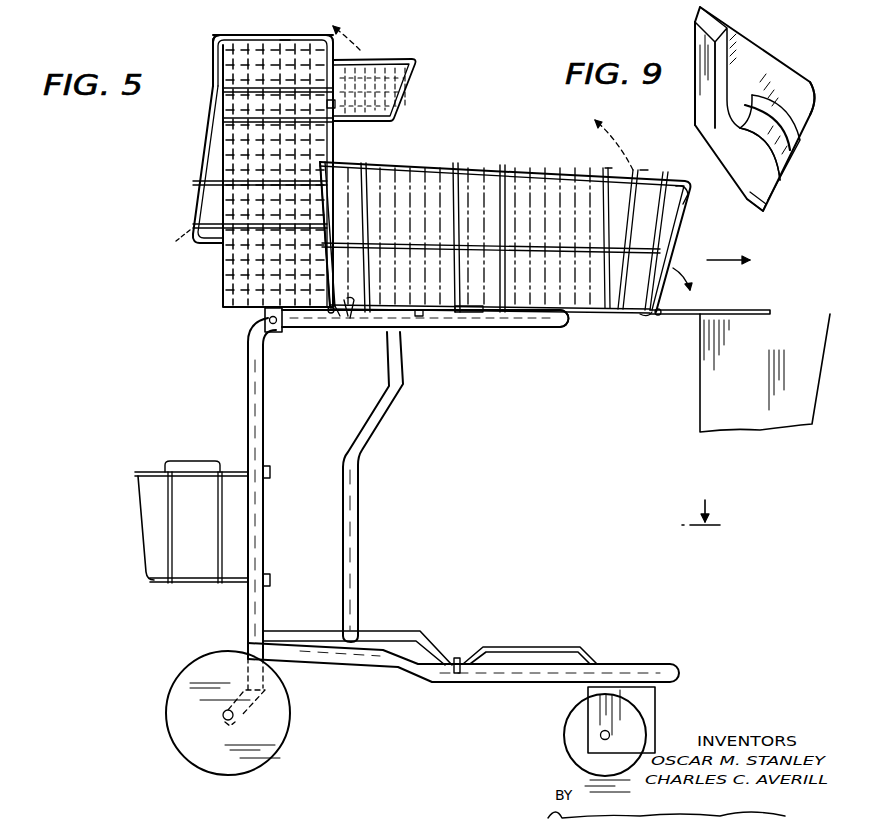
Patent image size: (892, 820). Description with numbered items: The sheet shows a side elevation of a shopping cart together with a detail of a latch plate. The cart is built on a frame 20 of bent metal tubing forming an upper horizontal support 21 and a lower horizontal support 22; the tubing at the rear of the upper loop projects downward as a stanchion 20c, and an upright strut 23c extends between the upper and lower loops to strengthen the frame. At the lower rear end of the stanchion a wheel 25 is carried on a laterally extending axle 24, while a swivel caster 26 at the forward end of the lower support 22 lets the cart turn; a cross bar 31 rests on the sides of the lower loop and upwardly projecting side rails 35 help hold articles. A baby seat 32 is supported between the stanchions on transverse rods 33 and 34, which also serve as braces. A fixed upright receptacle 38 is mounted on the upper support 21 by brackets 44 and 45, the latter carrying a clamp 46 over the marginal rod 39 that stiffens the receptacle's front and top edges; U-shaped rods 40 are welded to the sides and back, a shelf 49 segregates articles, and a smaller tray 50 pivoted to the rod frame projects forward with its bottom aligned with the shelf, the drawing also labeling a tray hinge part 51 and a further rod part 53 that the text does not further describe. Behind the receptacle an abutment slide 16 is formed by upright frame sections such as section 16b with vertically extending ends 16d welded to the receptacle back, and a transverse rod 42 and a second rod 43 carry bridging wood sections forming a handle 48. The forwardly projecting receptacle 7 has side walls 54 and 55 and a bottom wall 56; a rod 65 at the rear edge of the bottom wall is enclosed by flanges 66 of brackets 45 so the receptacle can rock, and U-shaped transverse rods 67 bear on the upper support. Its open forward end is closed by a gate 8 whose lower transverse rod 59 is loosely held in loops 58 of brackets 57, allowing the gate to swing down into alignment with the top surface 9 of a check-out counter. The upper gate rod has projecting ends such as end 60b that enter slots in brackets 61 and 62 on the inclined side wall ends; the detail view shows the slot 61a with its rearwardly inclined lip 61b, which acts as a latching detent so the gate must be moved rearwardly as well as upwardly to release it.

In FIG. 5, the forwardly projecting receptacle 7 is at (588, 172).
In FIG. 9, the forwardly projecting receptacle 7 is at (814, 86).
In FIG. 5, the gate 8 is at (672, 238).
In FIG. 5, the top surface 9 is at (800, 314).
In FIG. 5, the abutment slide 16 is at (183, 220).
In FIG. 5, the abutment slide section 16b is at (192, 181).
In FIG. 5, the vertically extending end 16d is at (212, 54).
In FIG. 5, the frame 20 is at (440, 730).
In FIG. 5, the stanchion 20c is at (248, 424).
In FIG. 5, the upper horizontal support 21 is at (450, 322).
In FIG. 5, the lower horizontal support 22 is at (418, 681).
In FIG. 5, the upright strut 23c is at (366, 436).
In FIG. 5, the axle 24 is at (223, 715).
In FIG. 5, the wheel 25 is at (190, 752).
In FIG. 5, the caster 26 is at (590, 735).
In FIG. 5, the cross bar 31 is at (466, 640).
In FIG. 5, the baby seat 32 is at (185, 588).
In FIG. 5, the transverse rod 33 is at (270, 472).
In FIG. 5, the transverse rod 34 is at (270, 586).
In FIG. 5, the side rail 35 is at (552, 648).
In FIG. 5, the upright receptacle 38 is at (200, 160).
In FIG. 5, the marginal rod 39 is at (310, 34).
In FIG. 5, the U-shaped rod 40 is at (238, 118).
In FIG. 5, the transverse rod 42 is at (164, 244).
In FIG. 5, the second rod 43 is at (204, 246).
In FIG. 5, the bracket 44 is at (270, 328).
In FIG. 5, the bracket 45 is at (338, 332).
In FIG. 5, the clamp 46 is at (328, 314).
In FIG. 5, the handle 48 is at (210, 212).
In FIG. 5, the shelf 49 is at (275, 17).
In FIG. 5, the tray 50 is at (395, 108).
In FIG. 5, the tray hinge 51 is at (331, 118).
In FIG. 5, the rod 53 is at (294, 20).
In FIG. 9, the side wall 54 is at (740, 33).
In FIG. 5, the side wall 55 is at (493, 170).
In FIG. 5, the bottom wall 56 is at (556, 327).
In FIG. 5, the bracket 57 is at (628, 0).
In FIG. 5, the loop 58 is at (650, 318).
In FIG. 5, the transverse rod 59 is at (658, 316).
In FIG. 5, the projecting end 60b is at (686, 196).
In FIG. 9, the bracket 61 is at (698, 104).
In FIG. 9, the slot 61a is at (722, 105).
In FIG. 9, the rearwardly inclined lip 61b is at (752, 102).
In FIG. 5, the bracket 62 is at (657, 86).
In FIG. 5, the rod 65 is at (350, 330).
In FIG. 5, the flange 66 is at (352, 318).
In FIG. 5, the U-shaped transverse rod 67 is at (496, 200).